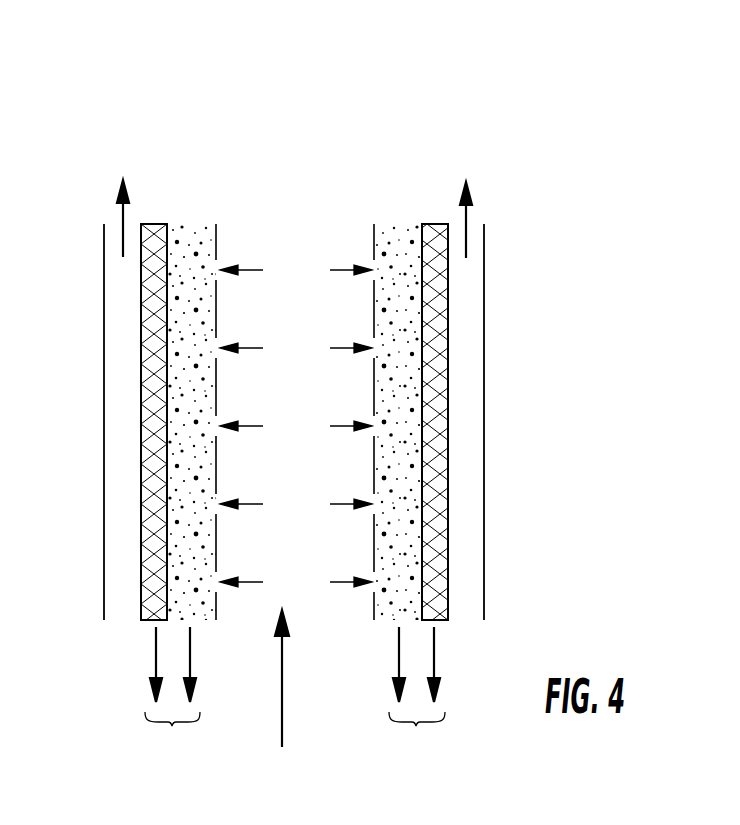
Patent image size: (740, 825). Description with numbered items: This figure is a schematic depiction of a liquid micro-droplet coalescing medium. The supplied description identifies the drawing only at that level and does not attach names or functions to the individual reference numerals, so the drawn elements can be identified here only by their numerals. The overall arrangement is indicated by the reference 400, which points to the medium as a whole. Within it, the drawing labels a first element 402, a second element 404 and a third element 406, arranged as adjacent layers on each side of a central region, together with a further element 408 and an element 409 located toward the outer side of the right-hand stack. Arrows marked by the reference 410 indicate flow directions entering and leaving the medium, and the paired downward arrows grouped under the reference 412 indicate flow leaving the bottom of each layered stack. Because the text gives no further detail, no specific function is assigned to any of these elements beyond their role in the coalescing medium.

The reactor assembly 400 is at (344, 410).
The porous layer 402 is at (188, 242).
The membrane layer 404 is at (153, 232).
The membrane layer lower portion 406 is at (150, 607).
The outer wall 408 is at (485, 450).
The flow channel 409 is at (463, 565).
The flow arrows 410 is at (121, 212).
The outlet flow 412 is at (295, 695).